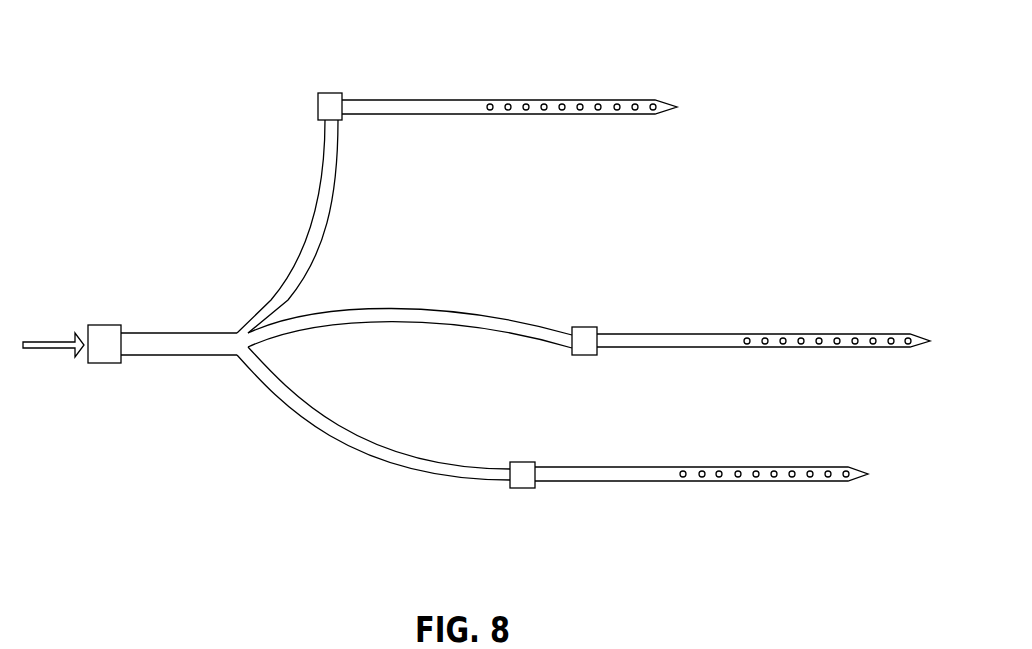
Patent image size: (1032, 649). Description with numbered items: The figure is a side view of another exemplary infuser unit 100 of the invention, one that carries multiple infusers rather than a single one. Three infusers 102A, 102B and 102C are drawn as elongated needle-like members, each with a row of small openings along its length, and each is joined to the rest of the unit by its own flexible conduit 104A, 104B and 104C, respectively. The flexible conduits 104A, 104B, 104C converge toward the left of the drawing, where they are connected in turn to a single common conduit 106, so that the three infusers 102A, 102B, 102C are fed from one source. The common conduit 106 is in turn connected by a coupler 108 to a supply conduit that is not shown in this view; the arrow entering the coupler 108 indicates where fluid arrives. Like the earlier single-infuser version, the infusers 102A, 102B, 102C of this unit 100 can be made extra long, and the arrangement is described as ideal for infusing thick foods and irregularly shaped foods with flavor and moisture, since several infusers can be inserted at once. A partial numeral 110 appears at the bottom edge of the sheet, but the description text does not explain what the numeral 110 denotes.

The infuser unit 100 is at (202, 267).
The infuser 102A is at (400, 87).
The infuser 102B is at (658, 318).
The infuser 102C is at (633, 497).
The flexible conduit 104A is at (328, 195).
The flexible conduit 104B is at (472, 320).
The flexible conduit 104C is at (421, 458).
The common conduit 106 is at (200, 357).
The coupler 108 is at (105, 363).
The catheter 110 is at (110, 642).